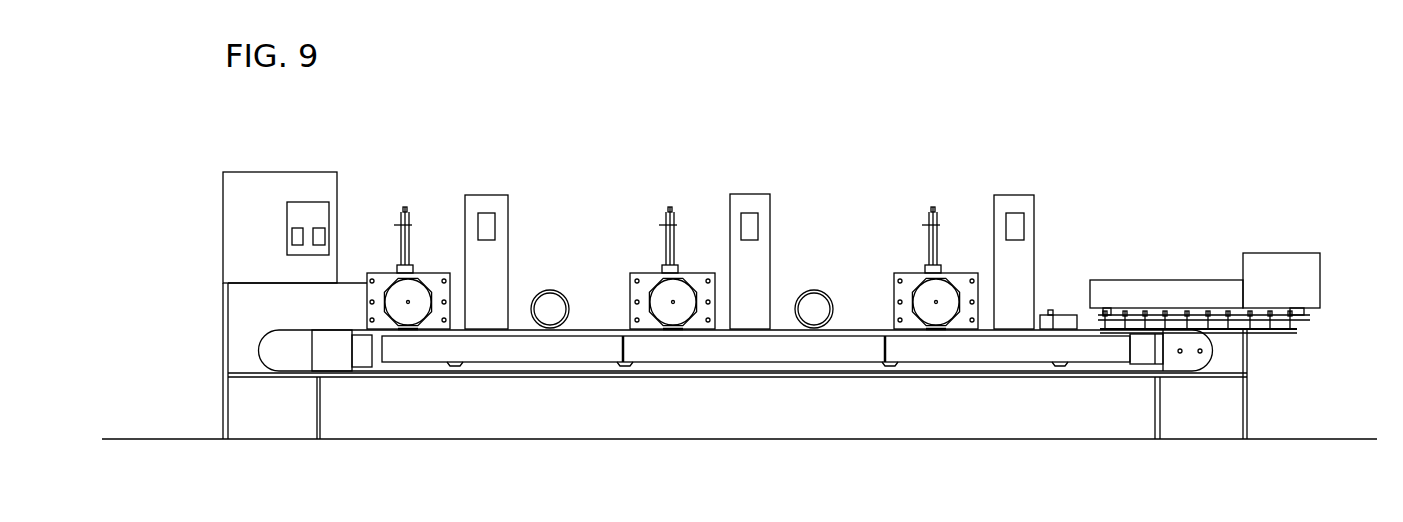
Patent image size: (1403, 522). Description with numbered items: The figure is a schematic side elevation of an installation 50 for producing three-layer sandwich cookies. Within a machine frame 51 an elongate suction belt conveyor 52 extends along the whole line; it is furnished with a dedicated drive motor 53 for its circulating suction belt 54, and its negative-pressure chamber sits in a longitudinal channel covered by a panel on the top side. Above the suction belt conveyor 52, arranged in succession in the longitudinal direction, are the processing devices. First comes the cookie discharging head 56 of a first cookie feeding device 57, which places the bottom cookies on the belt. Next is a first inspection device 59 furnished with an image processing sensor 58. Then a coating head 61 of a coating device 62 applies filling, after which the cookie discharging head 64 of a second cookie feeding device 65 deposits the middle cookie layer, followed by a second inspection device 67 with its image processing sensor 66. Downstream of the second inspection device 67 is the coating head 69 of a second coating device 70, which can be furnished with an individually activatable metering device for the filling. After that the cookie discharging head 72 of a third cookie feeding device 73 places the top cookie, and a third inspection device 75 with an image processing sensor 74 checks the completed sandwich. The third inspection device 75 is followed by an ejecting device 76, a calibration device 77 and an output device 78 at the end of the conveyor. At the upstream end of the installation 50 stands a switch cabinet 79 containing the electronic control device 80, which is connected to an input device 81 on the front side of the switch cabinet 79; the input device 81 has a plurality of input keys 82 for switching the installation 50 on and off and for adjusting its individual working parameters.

The installation 50 is at (1278, 198).
The machine frame 51 is at (227, 416).
The suction belt conveyor 52 is at (1227, 353).
The drive motor 53 is at (327, 357).
The suction belt 54 is at (300, 327).
The cookie discharging head 56 is at (417, 292).
The first cookie feeding device 57 is at (413, 200).
The image processing sensor 58 is at (490, 223).
The first inspection device 59 is at (486, 195).
The coating head 61 is at (553, 308).
The coating device 62 is at (547, 282).
The cookie discharging head 64 is at (680, 293).
The second cookie feeding device 65 is at (673, 193).
The image processing sensor 66 is at (753, 225).
The second inspection device 67 is at (750, 193).
The coating head 69 is at (817, 305).
The second coating device 70 is at (829, 258).
The cookie discharging head 72 is at (923, 290).
The third cookie feeding device 73 is at (933, 198).
The image processing sensor 74 is at (1018, 222).
The third inspection device 75 is at (1011, 198).
The ejecting device 76 is at (1063, 305).
The calibration device 77 is at (1117, 327).
The output device 78 is at (1183, 290).
The switch cabinet 79 is at (340, 182).
The electronic control device 80 is at (247, 190).
The input device 81 is at (293, 210).
The input keys 82 is at (320, 233).